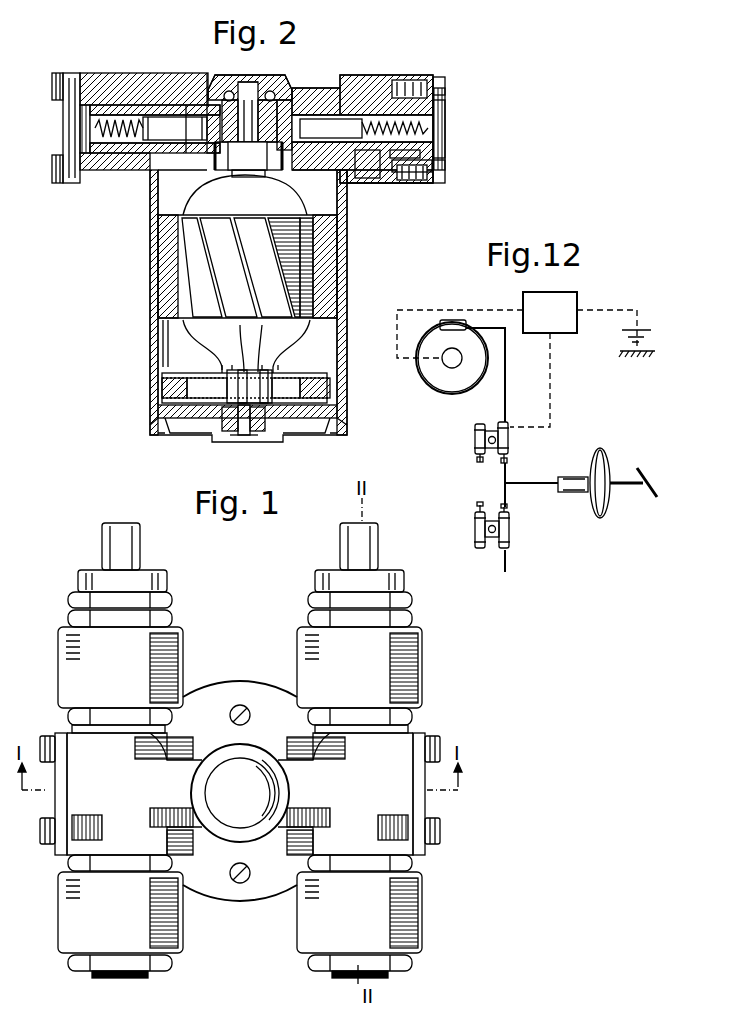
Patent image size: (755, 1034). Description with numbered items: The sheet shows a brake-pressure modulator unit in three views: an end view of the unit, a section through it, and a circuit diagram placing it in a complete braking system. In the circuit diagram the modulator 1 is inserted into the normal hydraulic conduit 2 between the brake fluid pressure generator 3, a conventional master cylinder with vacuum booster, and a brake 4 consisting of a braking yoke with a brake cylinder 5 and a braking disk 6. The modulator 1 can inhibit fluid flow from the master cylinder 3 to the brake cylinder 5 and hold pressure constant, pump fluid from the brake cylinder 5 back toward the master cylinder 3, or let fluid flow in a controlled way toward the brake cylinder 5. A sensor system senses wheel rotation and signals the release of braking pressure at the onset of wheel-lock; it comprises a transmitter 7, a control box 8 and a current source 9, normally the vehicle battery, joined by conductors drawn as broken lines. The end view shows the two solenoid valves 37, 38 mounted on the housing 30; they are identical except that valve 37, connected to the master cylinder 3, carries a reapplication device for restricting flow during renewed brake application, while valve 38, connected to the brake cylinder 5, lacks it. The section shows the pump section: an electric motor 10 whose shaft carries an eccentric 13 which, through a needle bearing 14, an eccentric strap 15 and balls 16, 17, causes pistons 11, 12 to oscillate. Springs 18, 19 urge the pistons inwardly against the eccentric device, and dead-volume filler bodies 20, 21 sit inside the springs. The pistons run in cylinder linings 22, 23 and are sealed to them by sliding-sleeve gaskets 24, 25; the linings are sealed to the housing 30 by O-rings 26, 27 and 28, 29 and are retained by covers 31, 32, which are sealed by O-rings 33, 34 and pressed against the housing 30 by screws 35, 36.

In FIG. 12, the modulator 1 is at (512, 440).
In FIG. 12, the hydraulic conduit 2 is at (502, 404).
In FIG. 12, the brake fluid pressure generator 3 is at (588, 521).
In FIG. 12, the brake 4 is at (424, 330).
In FIG. 12, the brake cylinder 5 is at (456, 320).
In FIG. 12, the braking disk 6 is at (426, 382).
In FIG. 12, the transmitter 7 is at (448, 364).
In FIG. 12, the control box 8 is at (580, 299).
In FIG. 12, the current source 9 is at (623, 339).
In FIG. 2, the electric motor 10 is at (148, 292).
In FIG. 2, the piston 11 is at (164, 120).
In FIG. 2, the piston 12 is at (318, 86).
In FIG. 2, the eccentric 13 is at (244, 92).
In FIG. 2, the needle bearing 14 is at (268, 78).
In FIG. 2, the eccentric strap 15 is at (288, 103).
In FIG. 2, the ball 16 is at (206, 76).
In FIG. 2, the ball 17 is at (283, 165).
In FIG. 2, the spring 18 is at (86, 76).
In FIG. 2, the spring 19 is at (366, 78).
In FIG. 2, the body 20 is at (112, 107).
In FIG. 2, the body 21 is at (434, 116).
In FIG. 2, the cylinder lining 22 is at (120, 153).
In FIG. 2, the cylinder lining 23 is at (368, 183).
In FIG. 2, the sliding-sleeve gasket 24 is at (190, 105).
In FIG. 2, the sliding-sleeve gasket 25 is at (298, 90).
In FIG. 2, the O-ring 26 is at (96, 170).
In FIG. 2, the O-ring 27 is at (142, 153).
In FIG. 2, the O-ring 28 is at (350, 183).
In FIG. 2, the O-ring 29 is at (396, 183).
In FIG. 2, the housing 30 is at (250, 84).
In FIG. 1, the housing 30 is at (245, 692).
In FIG. 2, the cover 31 is at (64, 122).
In FIG. 2, the cover 32 is at (434, 143).
In FIG. 2, the O-ring 33 is at (55, 148).
In FIG. 2, the O-ring 34 is at (412, 182).
In FIG. 2, the screw 35 is at (55, 93).
In FIG. 2, the screw 36 is at (444, 88).
In FIG. 12, the solenoid valve 37 is at (510, 454).
In FIG. 1, the solenoid valve 37 is at (426, 673).
In FIG. 12, the solenoid valve 38 is at (512, 424).
In FIG. 1, the solenoid valve 38 is at (426, 909).